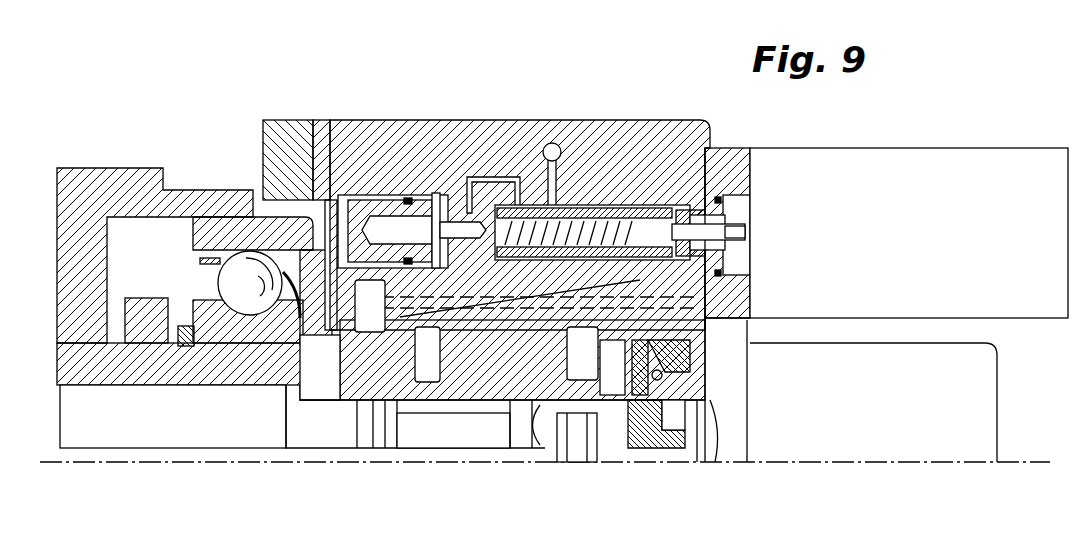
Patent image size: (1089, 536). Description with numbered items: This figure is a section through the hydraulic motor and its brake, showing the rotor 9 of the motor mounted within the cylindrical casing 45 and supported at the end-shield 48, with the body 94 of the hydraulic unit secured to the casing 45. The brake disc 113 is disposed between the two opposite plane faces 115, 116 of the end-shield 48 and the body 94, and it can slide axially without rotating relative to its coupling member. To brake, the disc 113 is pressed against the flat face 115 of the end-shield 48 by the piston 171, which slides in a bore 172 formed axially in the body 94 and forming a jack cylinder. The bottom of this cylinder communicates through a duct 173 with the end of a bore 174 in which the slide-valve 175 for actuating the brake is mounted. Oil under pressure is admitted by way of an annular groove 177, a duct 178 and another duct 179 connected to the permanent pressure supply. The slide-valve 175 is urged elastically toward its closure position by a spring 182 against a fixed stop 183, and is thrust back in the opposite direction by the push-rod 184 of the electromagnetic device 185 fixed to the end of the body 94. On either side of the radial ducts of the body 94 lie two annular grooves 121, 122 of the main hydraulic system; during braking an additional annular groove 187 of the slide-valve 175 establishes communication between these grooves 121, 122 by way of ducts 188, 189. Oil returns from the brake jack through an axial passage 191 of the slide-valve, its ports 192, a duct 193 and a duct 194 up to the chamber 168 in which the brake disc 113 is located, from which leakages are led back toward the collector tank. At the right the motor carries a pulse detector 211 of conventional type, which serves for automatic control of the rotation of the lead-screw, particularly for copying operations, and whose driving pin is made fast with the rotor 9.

The rotor 9 is at (167, 372).
The cylindrical casing 45 is at (114, 176).
The end-shield 48 is at (301, 140).
The body of the hydraulic unit 94 is at (449, 132).
The brake disc 113 is at (338, 138).
The plane face of the end-shield 115 is at (318, 228).
The plane face of the body 116 is at (280, 348).
The annular groove 121 is at (398, 413).
The annular groove 122 is at (592, 400).
The chamber 168 is at (372, 306).
The piston 171 is at (372, 138).
The bore 172 is at (400, 135).
The duct 173 is at (490, 135).
The bore 174 is at (481, 402).
The slide-valve 175 is at (640, 140).
The annular groove 177 is at (612, 140).
The duct 178 is at (585, 137).
The duct 179 is at (548, 137).
The spring 182 is at (510, 145).
The fixed stop 183 is at (717, 190).
The push-rod 184 is at (745, 234).
The electromagnetic device 185 is at (913, 157).
The additional annular groove 187 is at (672, 138).
The duct 188 is at (516, 402).
The duct 189 is at (640, 440).
The axial passage 191 is at (530, 420).
The ports 192 is at (705, 152).
The duct 193 is at (720, 405).
The duct 194 is at (440, 413).
The pulse detector 211 is at (966, 388).